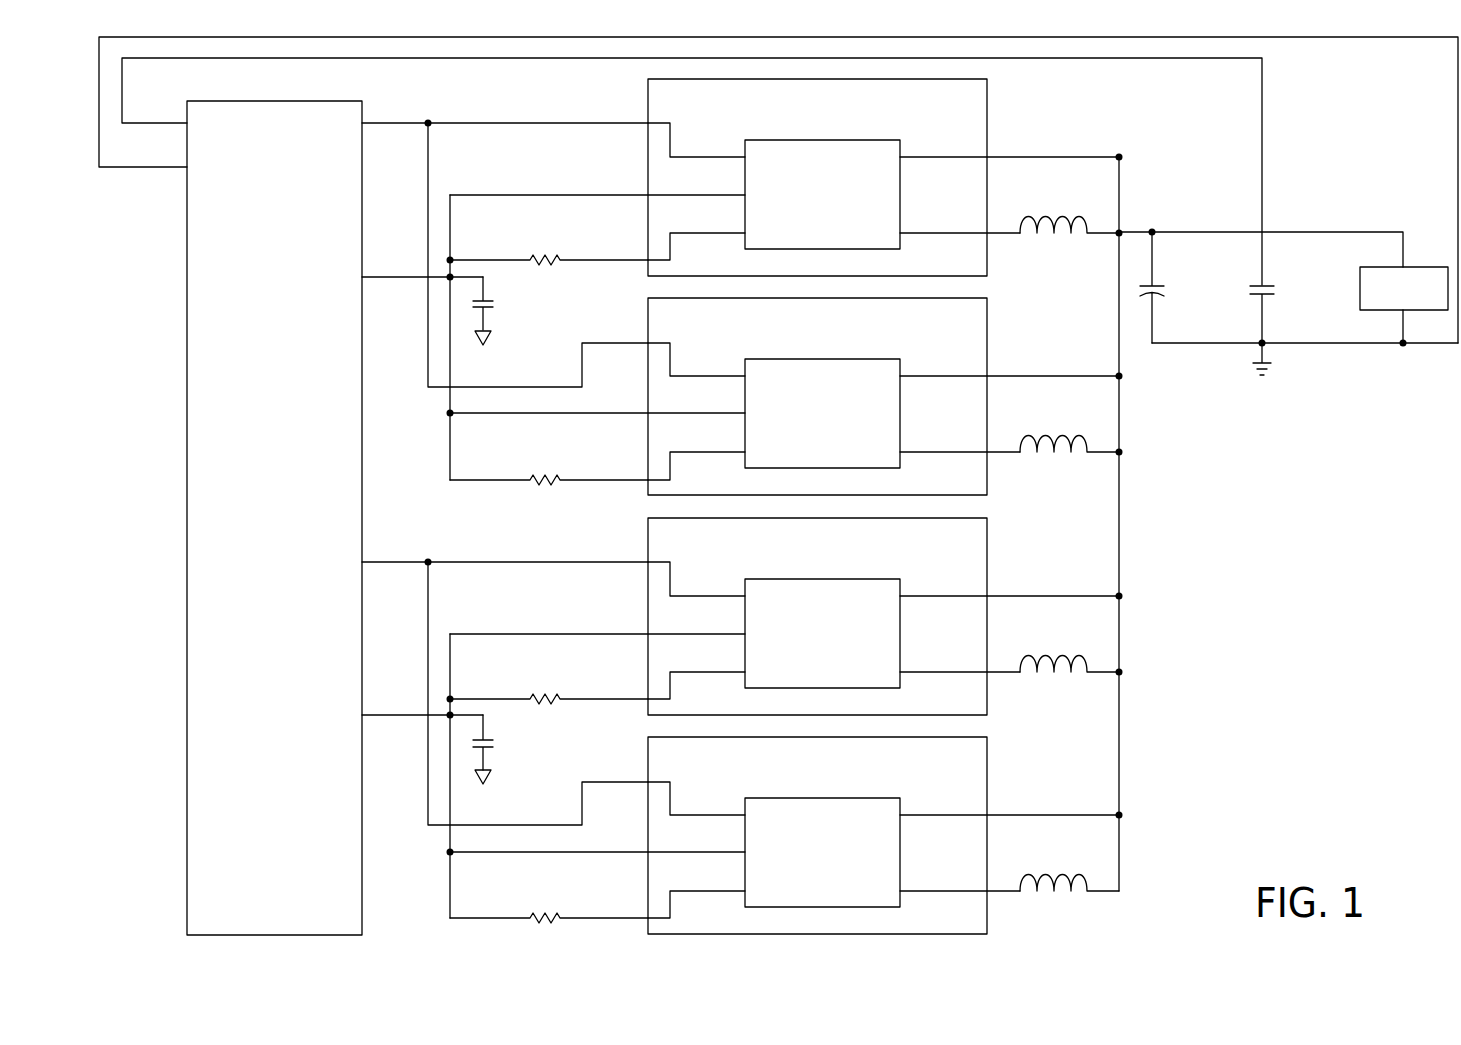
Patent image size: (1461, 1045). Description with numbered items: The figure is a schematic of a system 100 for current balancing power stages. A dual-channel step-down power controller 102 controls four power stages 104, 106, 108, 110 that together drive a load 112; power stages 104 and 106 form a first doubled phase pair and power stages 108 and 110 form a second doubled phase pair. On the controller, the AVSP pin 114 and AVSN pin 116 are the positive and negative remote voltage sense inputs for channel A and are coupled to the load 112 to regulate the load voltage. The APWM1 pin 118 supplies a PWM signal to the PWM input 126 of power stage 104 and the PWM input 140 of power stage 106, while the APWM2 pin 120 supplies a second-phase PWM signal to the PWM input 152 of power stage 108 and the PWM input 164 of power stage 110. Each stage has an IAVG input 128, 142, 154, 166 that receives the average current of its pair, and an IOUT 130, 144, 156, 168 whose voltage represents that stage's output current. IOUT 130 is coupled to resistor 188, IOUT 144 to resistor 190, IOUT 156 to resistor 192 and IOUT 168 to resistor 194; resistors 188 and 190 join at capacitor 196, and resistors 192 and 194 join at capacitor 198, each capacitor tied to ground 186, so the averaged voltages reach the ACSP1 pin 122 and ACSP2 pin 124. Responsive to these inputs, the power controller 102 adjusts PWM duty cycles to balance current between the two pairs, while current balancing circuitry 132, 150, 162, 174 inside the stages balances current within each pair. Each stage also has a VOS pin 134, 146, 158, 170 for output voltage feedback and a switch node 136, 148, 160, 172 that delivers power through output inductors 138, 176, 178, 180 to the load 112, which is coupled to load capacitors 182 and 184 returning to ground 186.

The system 100 is at (1346, 754).
The power controller 102 is at (254, 512).
The power stage 104 is at (786, 178).
The power stage 106 is at (786, 397).
The power stage 108 is at (786, 617).
The power stage 110 is at (786, 836).
The load 112 is at (1420, 262).
The AVSP pin 114 is at (178, 118).
The AVSN pin 116 is at (178, 172).
The APWM1 pin 118 is at (384, 118).
The APWM2 pin 120 is at (384, 556).
The ACSP1 pin 122 is at (385, 282).
The ACSP2 pin 124 is at (385, 720).
The PWM input 126 is at (647, 112).
The IAVG input 128 is at (647, 184).
The IOUT 130 is at (647, 251).
The current balancing circuitry 132 is at (880, 139).
The VOS pin 134 is at (995, 149).
The switch node 136 is at (995, 239).
The output inductor 138 is at (1061, 213).
The PWM input 140 is at (647, 331).
The IAVG input 142 is at (647, 403).
The IOUT 144 is at (647, 470).
The VOS pin 146 is at (995, 368).
The switch node 148 is at (995, 458).
The current balancing circuitry 150 is at (880, 358).
The PWM input 152 is at (647, 551).
The IAVG input 154 is at (647, 623).
The IOUT 156 is at (647, 690).
The VOS pin 158 is at (995, 588).
The switch node 160 is at (995, 678).
The current balancing circuitry 162 is at (880, 578).
The PWM input 164 is at (647, 770).
The IAVG input 166 is at (647, 842).
The IOUT 168 is at (647, 909).
The VOS pin 170 is at (995, 807).
The switch node 172 is at (995, 897).
The current balancing circuitry 174 is at (880, 797).
The output inductor 176 is at (1061, 432).
The output inductor 178 is at (1061, 652).
The output inductor 180 is at (1061, 871).
The load capacitor 182 is at (1168, 290).
The load capacitor 184 is at (1278, 290).
The ground 186 is at (492, 340).
The resistor 188 is at (550, 251).
The resistor 190 is at (550, 470).
The resistor 192 is at (550, 690).
The resistor 194 is at (550, 909).
The capacitor 196 is at (498, 303).
The capacitor 198 is at (498, 746).